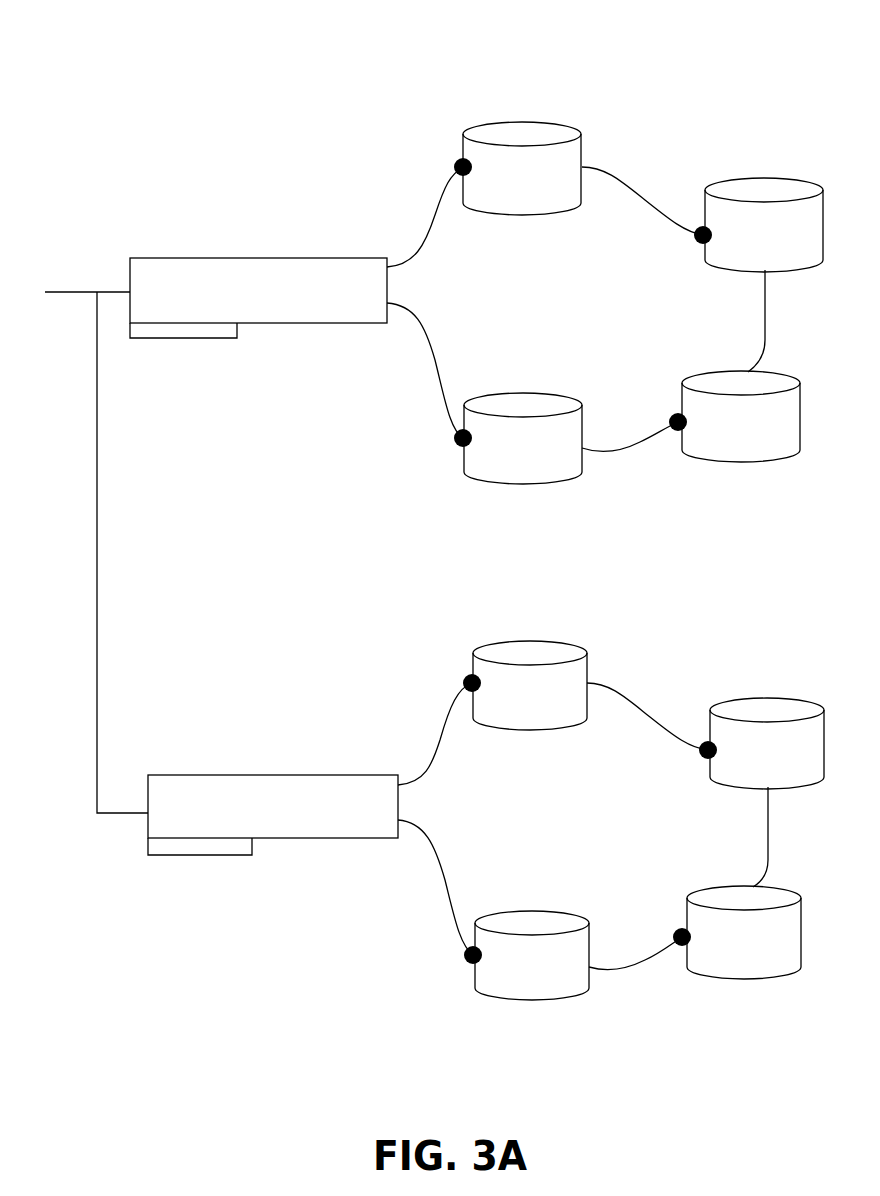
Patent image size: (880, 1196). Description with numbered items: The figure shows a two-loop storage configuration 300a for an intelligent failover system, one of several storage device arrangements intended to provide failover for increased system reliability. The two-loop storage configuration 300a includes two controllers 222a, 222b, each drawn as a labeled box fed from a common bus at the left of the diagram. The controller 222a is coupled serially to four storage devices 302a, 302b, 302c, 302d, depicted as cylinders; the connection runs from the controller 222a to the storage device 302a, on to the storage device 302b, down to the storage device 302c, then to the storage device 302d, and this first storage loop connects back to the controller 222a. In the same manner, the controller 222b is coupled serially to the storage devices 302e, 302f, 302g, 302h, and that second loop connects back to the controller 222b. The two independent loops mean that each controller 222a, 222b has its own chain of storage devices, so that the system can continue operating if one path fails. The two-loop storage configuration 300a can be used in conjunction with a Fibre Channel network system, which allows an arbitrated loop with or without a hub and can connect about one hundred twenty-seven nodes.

The two-loop storage configuration 300a is at (667, 58).
The controller 222a is at (303, 257).
The controller 222b is at (320, 773).
The storage device 302a is at (497, 188).
The storage device 302b is at (746, 247).
The storage device 302c is at (715, 440).
The storage device 302d is at (499, 462).
The storage device 302e is at (506, 713).
The storage device 302f is at (745, 767).
The storage device 302g is at (725, 953).
The storage device 302h is at (509, 980).